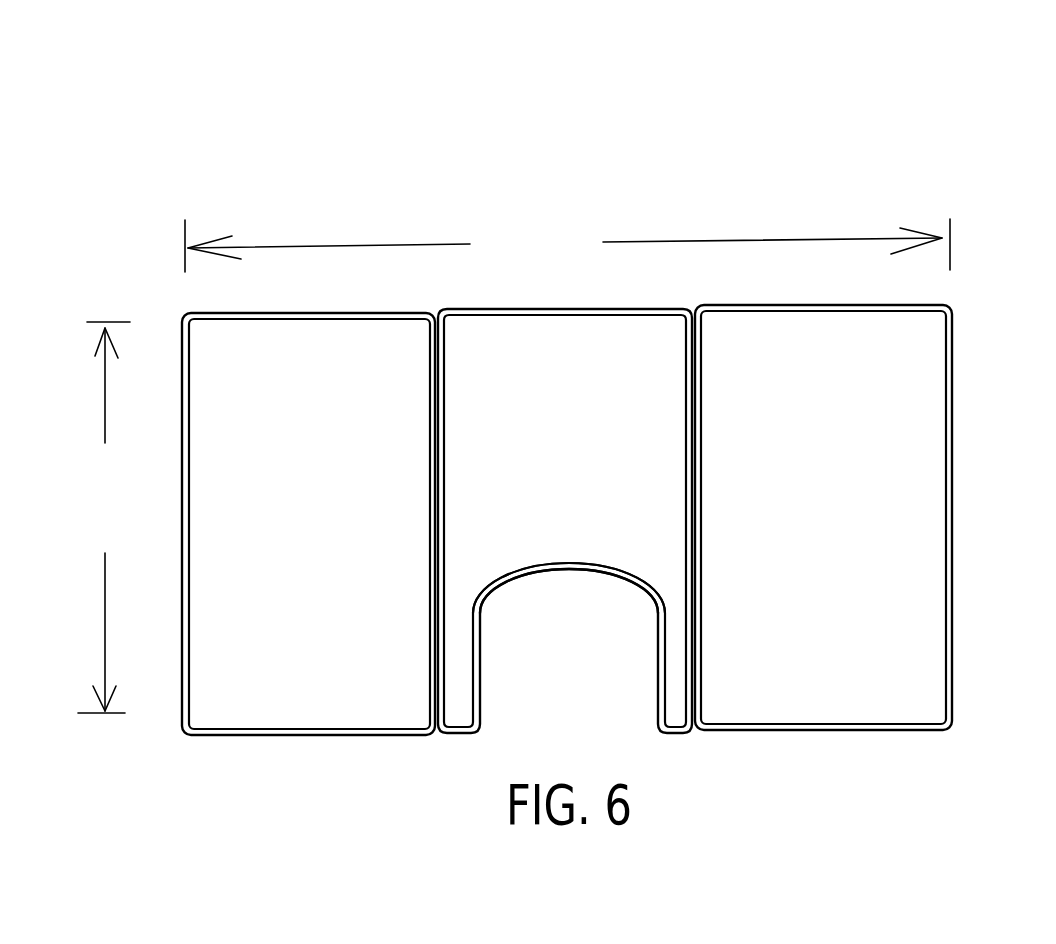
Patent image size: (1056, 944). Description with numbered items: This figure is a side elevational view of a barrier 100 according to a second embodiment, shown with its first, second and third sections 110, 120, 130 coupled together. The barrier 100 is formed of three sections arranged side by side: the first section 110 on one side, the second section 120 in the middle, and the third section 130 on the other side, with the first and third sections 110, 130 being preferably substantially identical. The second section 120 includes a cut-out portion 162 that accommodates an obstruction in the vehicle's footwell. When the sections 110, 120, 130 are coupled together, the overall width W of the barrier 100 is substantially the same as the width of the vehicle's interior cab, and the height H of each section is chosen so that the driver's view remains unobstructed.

The barrier 100 is at (818, 148).
The first section 110 is at (310, 632).
The second section 120 is at (498, 530).
The third section 130 is at (878, 585).
The cut-out portion 162 is at (570, 567).